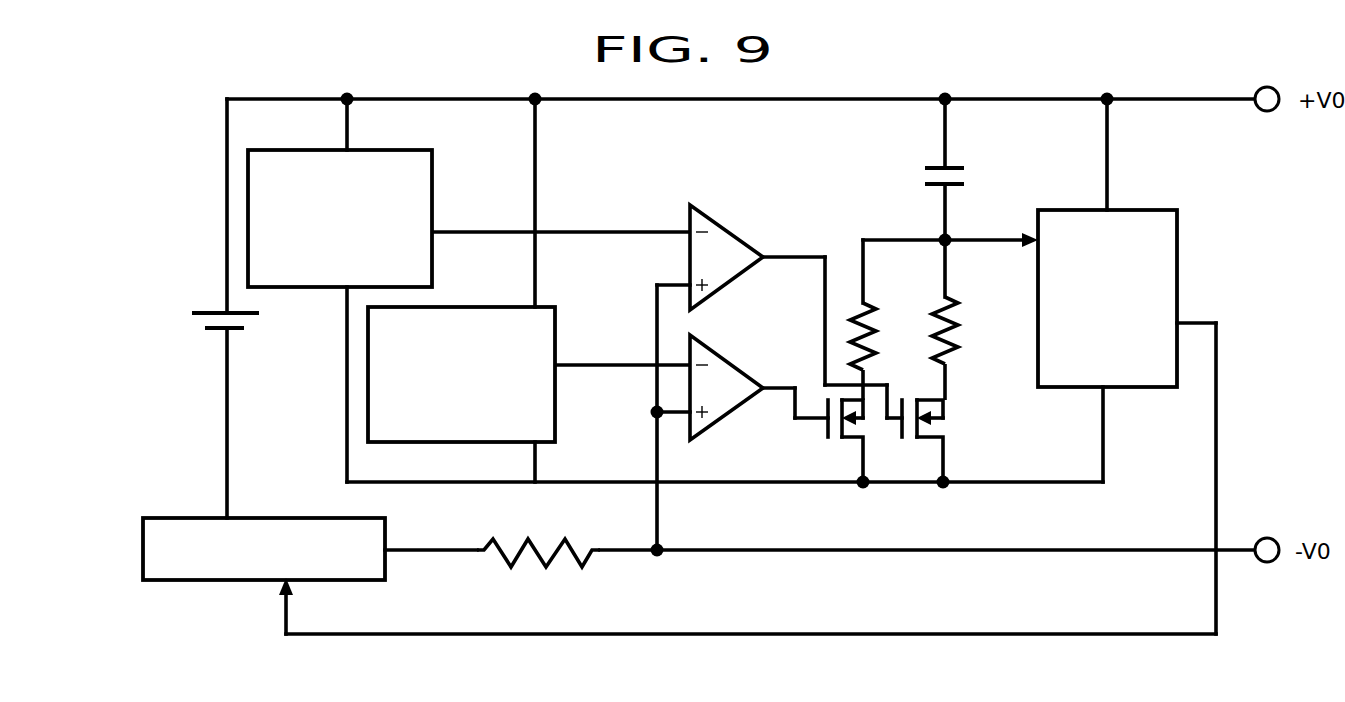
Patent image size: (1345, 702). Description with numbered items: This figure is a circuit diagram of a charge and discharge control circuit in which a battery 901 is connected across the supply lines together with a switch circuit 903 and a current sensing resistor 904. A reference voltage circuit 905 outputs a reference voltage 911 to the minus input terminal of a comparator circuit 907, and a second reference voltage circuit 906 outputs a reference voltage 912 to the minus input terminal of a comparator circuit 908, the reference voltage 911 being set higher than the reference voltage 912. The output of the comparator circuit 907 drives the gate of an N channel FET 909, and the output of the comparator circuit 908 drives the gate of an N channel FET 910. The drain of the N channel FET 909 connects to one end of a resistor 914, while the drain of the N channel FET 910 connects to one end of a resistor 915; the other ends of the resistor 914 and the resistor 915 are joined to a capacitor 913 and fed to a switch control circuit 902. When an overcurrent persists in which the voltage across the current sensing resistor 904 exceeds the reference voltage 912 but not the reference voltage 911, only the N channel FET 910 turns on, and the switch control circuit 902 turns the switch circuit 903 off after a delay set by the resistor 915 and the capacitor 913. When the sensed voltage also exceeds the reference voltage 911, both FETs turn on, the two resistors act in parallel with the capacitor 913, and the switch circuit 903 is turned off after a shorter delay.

The battery 901 is at (191, 308).
The switch control circuit 902 is at (1178, 277).
The switch circuit 903 is at (360, 583).
The current sensing resistor 904 is at (550, 578).
The reference voltage circuit 905 is at (434, 185).
The reference voltage circuit 906 is at (591, 281).
The comparator circuit 907 is at (727, 226).
The comparator circuit 908 is at (710, 437).
The N channel FET 909 is at (948, 410).
The N channel FET 910 is at (845, 445).
The reference voltage 911 is at (561, 214).
The reference voltage 912 is at (622, 348).
The capacitor 913 is at (965, 178).
The resistor 914 is at (963, 340).
The resistor 915 is at (888, 337).